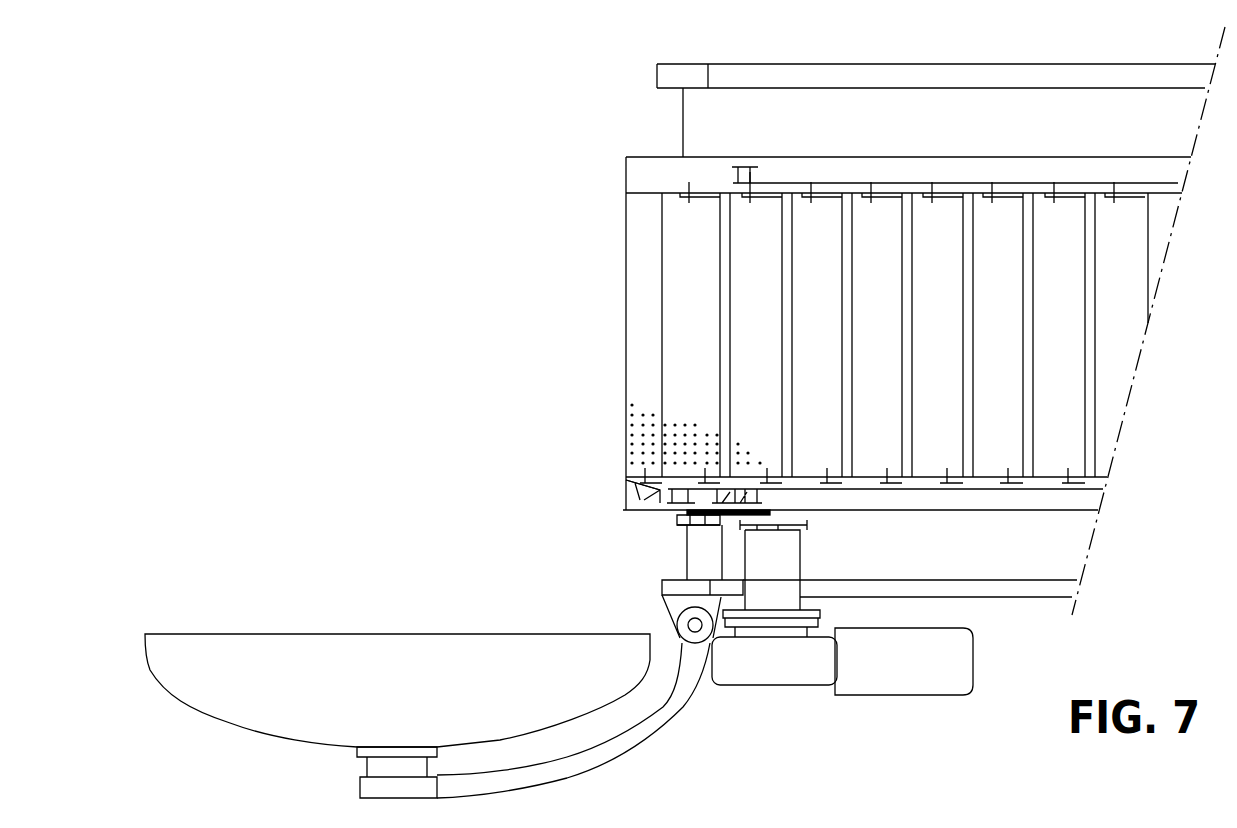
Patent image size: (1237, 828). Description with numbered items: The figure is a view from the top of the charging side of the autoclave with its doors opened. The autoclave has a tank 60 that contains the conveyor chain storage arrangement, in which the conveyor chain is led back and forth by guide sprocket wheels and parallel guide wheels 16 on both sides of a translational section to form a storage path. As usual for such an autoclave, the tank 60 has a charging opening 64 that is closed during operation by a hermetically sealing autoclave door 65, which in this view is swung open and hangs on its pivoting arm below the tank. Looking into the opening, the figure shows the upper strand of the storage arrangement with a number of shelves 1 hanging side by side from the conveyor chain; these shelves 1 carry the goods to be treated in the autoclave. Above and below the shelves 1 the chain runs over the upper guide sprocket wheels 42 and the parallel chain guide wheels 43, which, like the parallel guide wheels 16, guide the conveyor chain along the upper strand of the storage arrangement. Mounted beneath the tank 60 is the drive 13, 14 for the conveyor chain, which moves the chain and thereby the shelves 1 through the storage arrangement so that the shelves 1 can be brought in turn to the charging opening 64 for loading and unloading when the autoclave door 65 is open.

The tank 60 is at (833, 63).
The charging opening 64 is at (608, 334).
The shelves 1 is at (987, 220).
The upper guide sprocket wheels 42 is at (628, 503).
The parallel chain guide wheels 43 is at (643, 485).
The parallel guide wheels 16 is at (678, 517).
The drive 14 is at (778, 670).
The drive 13 is at (888, 680).
The autoclave door 65 is at (312, 713).